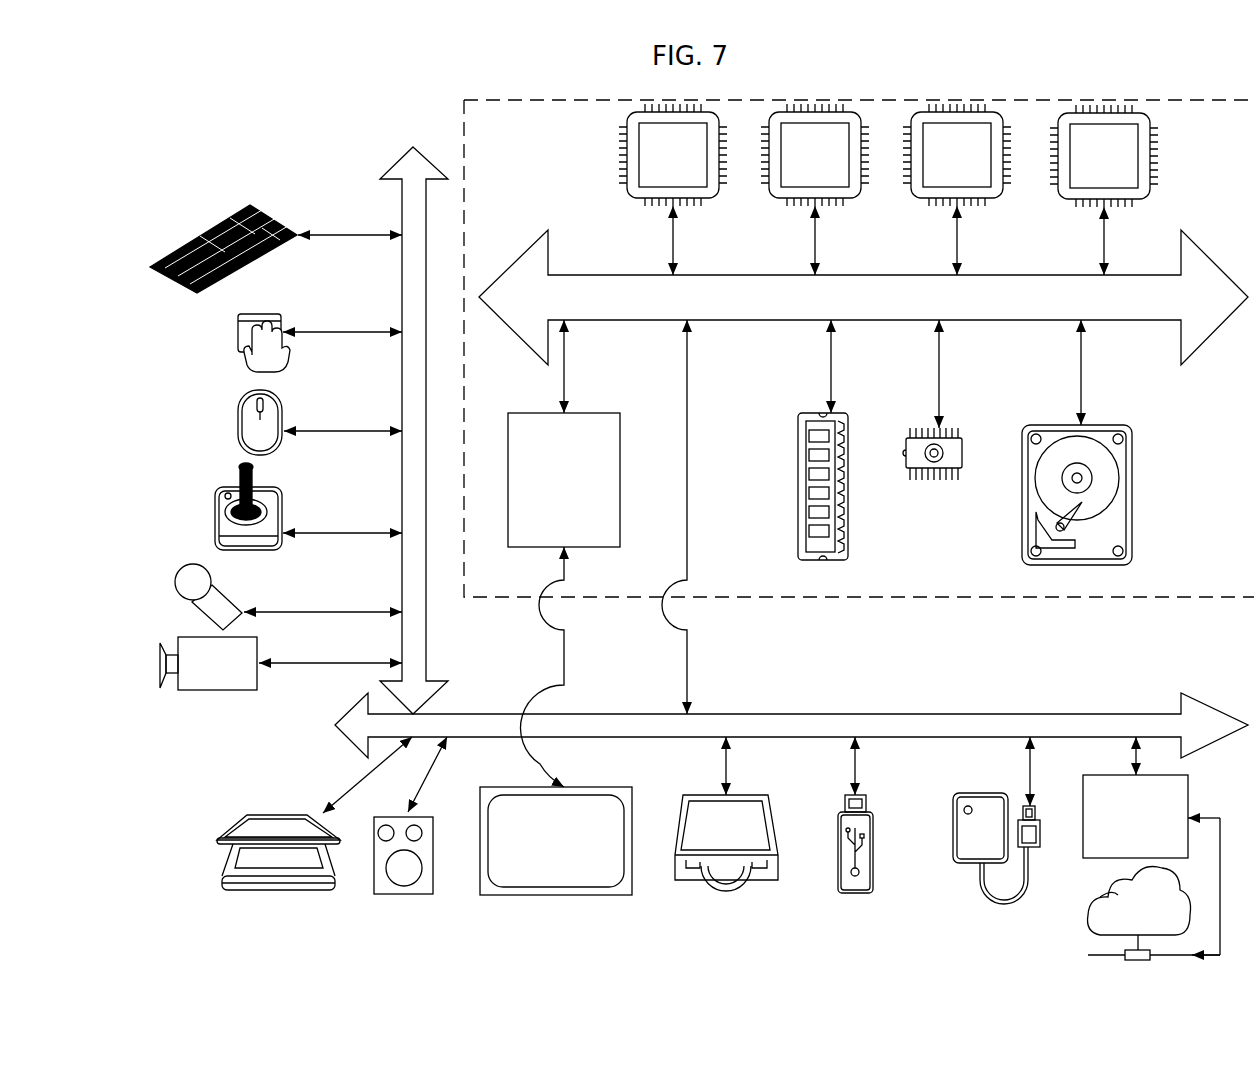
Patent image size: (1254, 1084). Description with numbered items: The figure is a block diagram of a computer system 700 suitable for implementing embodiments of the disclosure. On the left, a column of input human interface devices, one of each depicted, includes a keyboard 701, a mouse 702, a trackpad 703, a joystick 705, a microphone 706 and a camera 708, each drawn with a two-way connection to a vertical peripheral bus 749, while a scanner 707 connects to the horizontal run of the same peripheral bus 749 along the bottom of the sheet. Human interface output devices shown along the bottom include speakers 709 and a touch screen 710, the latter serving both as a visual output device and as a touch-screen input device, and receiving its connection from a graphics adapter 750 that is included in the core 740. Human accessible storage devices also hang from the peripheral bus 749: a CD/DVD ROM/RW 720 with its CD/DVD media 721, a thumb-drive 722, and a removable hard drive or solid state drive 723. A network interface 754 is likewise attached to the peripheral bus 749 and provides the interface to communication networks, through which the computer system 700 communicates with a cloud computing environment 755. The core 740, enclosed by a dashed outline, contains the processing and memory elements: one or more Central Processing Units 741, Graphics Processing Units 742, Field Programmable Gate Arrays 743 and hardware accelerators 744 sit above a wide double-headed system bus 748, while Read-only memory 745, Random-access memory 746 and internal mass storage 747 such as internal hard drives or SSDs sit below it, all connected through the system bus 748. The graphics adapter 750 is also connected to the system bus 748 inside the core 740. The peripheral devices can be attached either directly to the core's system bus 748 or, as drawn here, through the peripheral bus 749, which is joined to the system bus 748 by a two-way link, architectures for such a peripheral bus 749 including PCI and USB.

The computer system 700 is at (187, 136).
The keyboard 701 is at (150, 268).
The mouse 702 is at (227, 423).
The trackpad 703 is at (227, 343).
The joystick 705 is at (215, 532).
The microphone 706 is at (176, 590).
The scanner 707 is at (222, 882).
The camera 708 is at (162, 666).
The speakers 709 is at (402, 895).
The touch screen 710 is at (550, 895).
The CD/DVD ROM/RW 720 is at (770, 880).
The CD/DVD media 721 is at (706, 880).
The thumb-drive 722 is at (855, 893).
The removable hard drive or solid state drive 723 is at (953, 863).
The core 740 is at (882, 598).
The Central Processing Unit 741 is at (673, 189).
The Graphics Processing Unit 742 is at (815, 189).
The Field Programmable Gate Array 743 is at (957, 189).
The hardware accelerator 744 is at (1104, 190).
The Read-only memory 745 is at (925, 482).
The Random-access memory 746 is at (798, 482).
The internal mass storage 747 is at (1033, 425).
The system bus 748 is at (863, 297).
The peripheral bus 749 is at (402, 184).
The graphics adapter 750 is at (564, 433).
The network interface 754 is at (1135, 797).
The cloud computing environment 755 is at (1088, 922).